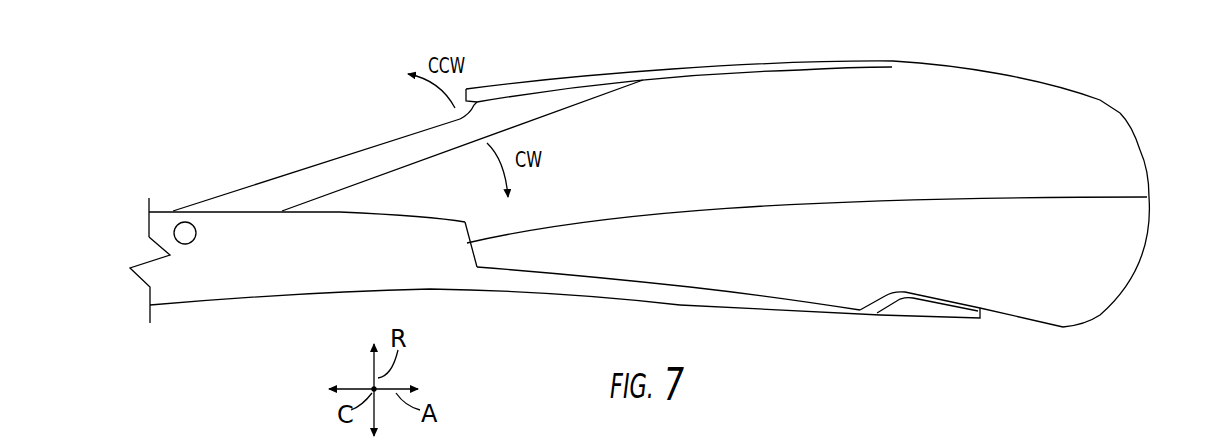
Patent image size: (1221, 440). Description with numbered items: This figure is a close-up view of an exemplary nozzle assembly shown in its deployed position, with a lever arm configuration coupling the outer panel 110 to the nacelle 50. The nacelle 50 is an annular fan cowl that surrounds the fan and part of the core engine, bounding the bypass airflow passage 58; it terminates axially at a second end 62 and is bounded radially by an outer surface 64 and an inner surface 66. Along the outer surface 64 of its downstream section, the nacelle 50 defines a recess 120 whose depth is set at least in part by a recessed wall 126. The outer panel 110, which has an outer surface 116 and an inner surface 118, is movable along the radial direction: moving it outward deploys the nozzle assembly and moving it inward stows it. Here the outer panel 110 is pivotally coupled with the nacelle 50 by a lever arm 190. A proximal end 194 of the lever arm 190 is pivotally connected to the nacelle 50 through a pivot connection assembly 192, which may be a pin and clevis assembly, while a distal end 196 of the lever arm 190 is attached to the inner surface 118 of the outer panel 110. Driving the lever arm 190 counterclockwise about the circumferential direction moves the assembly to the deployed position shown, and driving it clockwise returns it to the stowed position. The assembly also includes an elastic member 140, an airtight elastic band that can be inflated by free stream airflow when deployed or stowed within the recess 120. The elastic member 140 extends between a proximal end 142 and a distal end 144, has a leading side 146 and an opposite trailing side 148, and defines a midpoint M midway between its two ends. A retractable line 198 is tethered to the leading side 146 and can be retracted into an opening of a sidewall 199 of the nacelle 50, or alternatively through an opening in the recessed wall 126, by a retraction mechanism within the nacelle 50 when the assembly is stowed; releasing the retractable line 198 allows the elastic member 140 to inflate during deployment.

The nacelle 50 is at (230, 265).
The bypass airflow passage 58 is at (488, 351).
The second end 62 is at (975, 326).
The outer surface 64 is at (160, 207).
The inner surface 66 is at (294, 296).
The outer panel 110 is at (708, 64).
The outer surface 116 is at (640, 68).
The inner surface 118 is at (650, 85).
The recess 120 is at (766, 270).
The recessed wall 126 is at (690, 281).
The elastic member 140 is at (1003, 72).
The proximal end 142 is at (846, 296).
The distal end 144 is at (864, 80).
The leading side 146 is at (1133, 137).
The trailing side 148 is at (1123, 105).
The lever arm 190 is at (392, 148).
The pivot connection assembly 192 is at (183, 246).
The proximal end 194 is at (204, 184).
The distal end 196 is at (600, 104).
The retractable line 198 is at (1005, 198).
The sidewall 199 is at (470, 254).
The midpoint M is at (1157, 198).